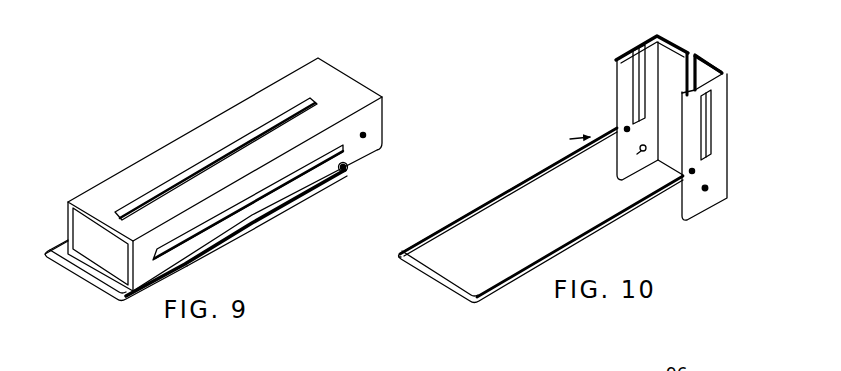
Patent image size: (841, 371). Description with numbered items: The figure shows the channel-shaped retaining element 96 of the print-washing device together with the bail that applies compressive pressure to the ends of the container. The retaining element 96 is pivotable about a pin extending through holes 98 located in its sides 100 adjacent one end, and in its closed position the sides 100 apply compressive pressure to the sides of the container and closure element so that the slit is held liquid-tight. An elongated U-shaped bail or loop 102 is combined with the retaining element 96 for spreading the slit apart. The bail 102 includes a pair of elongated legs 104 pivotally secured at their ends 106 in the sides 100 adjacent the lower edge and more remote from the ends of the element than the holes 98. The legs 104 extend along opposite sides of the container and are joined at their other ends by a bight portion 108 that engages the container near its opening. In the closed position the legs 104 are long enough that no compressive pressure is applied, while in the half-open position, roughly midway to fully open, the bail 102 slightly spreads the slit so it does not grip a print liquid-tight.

In FIG. 9, the channel-shaped retaining element 96 is at (175, 138).
In FIG. 10, the channel-shaped retaining element 96 is at (713, 60).
In FIG. 9, the holes 98 is at (366, 135).
In FIG. 10, the holes 98 is at (638, 149).
In FIG. 9, the sides 100 is at (372, 147).
In FIG. 10, the sides 100 is at (632, 165).
In FIG. 9, the U-shaped bail 102 is at (103, 296).
In FIG. 10, the U-shaped bail 102 is at (449, 290).
In FIG. 9, the legs 104 is at (252, 224).
In FIG. 10, the legs 104 is at (523, 182).
In FIG. 9, the ends 106 is at (346, 168).
In FIG. 10, the ends 106 is at (627, 129).
In FIG. 9, the bight portion 108 is at (78, 274).
In FIG. 10, the bight portion 108 is at (428, 272).